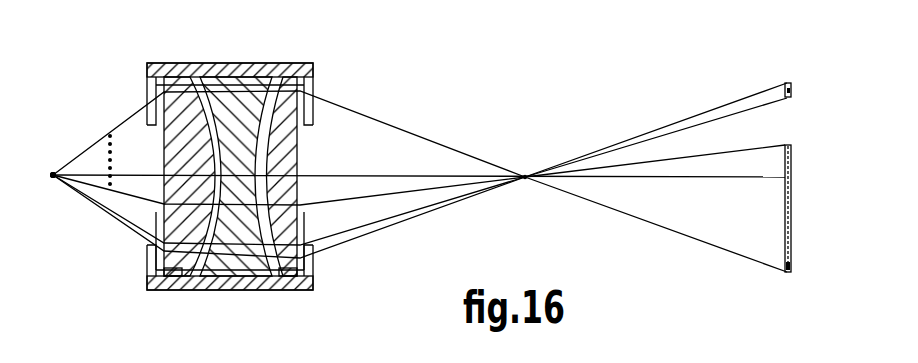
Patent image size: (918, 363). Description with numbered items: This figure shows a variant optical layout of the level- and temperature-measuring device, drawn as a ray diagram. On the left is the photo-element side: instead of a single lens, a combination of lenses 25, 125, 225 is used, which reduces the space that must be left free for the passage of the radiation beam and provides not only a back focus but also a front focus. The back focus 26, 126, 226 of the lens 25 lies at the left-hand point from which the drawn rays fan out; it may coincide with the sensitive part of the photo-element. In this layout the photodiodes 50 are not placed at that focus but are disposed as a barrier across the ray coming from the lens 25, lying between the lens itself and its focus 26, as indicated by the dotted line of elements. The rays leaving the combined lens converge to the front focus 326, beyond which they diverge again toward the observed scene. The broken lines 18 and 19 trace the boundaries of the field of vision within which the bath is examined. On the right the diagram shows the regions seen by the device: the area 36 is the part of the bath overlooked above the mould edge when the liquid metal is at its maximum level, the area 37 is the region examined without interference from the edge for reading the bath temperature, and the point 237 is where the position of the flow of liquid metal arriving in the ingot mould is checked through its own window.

The lens 25 is at (170, 121).
The lens 125 is at (210, 97).
The lens 225 is at (298, 117).
The broken line tracing 18 is at (431, 144).
The broken line tracing 19 is at (343, 200).
The back focus 26 is at (53, 187).
The back focus 126 is at (64, 215).
The back focus 226 is at (67, 228).
The photodiode 50 is at (108, 160).
The front focus 326 is at (526, 170).
The flow position check area 237 is at (788, 82).
The area of the bath 36 is at (781, 196).
The area of the bath 37 is at (778, 274).